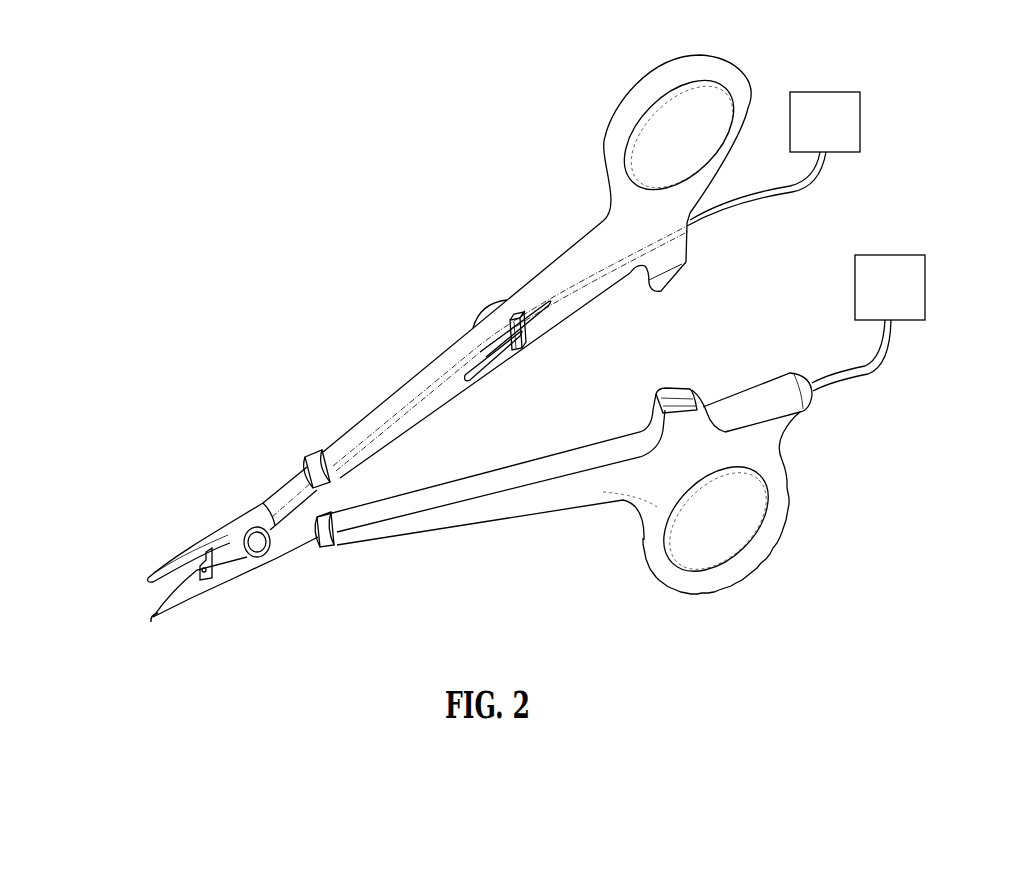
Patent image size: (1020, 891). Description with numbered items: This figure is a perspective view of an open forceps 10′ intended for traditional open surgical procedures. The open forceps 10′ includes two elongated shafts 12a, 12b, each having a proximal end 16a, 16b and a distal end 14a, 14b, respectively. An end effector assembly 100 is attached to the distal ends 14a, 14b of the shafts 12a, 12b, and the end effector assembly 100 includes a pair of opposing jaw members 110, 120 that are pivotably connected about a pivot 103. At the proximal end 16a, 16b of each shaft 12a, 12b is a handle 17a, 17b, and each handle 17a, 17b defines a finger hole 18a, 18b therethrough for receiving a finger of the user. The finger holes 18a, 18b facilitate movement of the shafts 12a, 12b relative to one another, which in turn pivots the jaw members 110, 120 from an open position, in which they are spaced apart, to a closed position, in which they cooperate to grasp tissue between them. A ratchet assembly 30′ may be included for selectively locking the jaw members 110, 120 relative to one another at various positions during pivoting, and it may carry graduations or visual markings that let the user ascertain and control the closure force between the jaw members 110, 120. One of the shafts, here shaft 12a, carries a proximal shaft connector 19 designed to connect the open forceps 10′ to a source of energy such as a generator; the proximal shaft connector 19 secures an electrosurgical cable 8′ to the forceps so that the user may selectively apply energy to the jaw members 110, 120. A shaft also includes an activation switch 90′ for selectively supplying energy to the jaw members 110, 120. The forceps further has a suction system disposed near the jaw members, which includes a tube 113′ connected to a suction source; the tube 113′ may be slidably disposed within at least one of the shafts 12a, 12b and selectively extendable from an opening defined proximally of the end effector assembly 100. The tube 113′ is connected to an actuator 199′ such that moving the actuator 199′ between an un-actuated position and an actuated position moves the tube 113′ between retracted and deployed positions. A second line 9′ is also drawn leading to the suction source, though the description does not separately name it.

The open forceps 10′ is at (373, 234).
The shaft 12a is at (480, 505).
The shaft 12b is at (443, 365).
The distal end 14a is at (343, 533).
The distal end 14b is at (322, 452).
The proximal end 16a is at (640, 470).
The proximal end 16b is at (608, 227).
The handle 17a is at (777, 520).
The handle 17b is at (728, 72).
The finger hole 18a is at (730, 542).
The finger hole 18b is at (665, 108).
The proximal shaft connector 19 is at (780, 432).
The ratchet assembly 30′ is at (667, 290).
The activation switch 90′ is at (498, 312).
The actuator 199′ is at (541, 350).
The electrosurgical cable 8′ is at (863, 370).
The fluid supply tube 9′ is at (800, 190).
The end effector assembly 100 is at (247, 488).
The pivot 103 is at (258, 546).
The jaw member 110 is at (148, 582).
The tube 113′ is at (213, 560).
The jaw member 120 is at (152, 618).